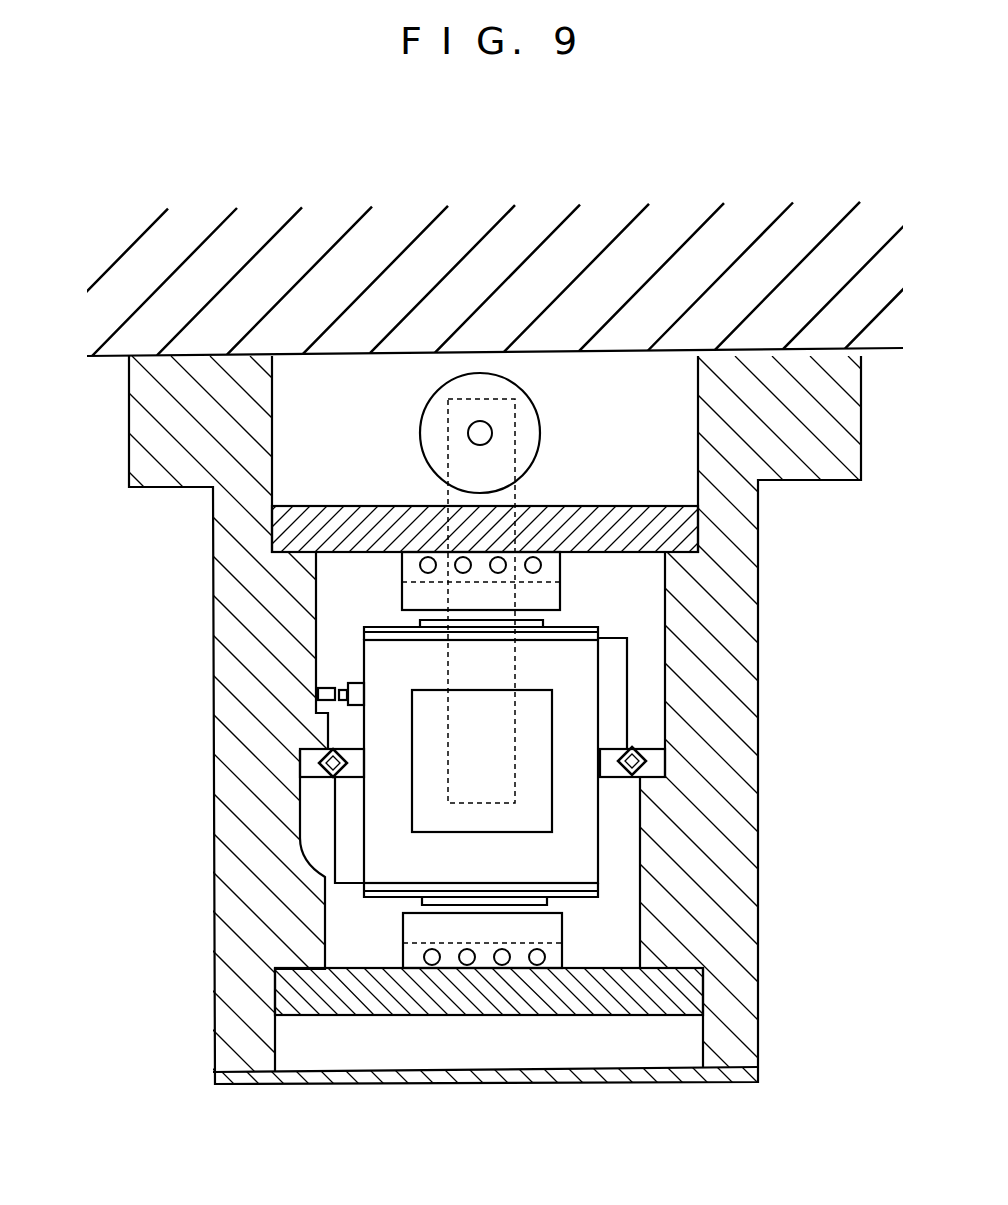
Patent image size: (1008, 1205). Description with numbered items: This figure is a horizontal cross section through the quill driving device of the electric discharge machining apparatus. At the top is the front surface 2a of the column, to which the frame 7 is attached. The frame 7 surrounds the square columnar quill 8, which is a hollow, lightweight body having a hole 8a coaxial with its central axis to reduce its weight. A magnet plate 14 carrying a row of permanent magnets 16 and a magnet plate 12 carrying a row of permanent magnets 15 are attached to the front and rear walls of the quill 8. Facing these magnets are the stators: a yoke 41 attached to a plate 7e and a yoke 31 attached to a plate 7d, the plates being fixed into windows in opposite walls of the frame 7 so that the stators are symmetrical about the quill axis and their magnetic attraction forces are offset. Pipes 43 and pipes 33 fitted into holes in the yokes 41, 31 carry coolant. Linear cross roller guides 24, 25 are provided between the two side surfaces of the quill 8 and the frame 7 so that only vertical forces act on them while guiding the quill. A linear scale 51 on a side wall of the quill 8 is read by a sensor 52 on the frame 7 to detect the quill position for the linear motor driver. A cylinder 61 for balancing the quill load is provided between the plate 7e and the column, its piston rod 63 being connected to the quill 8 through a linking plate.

The front surface of the column 2a is at (878, 349).
The frame 7 is at (855, 430).
The plate 7e is at (690, 527).
The plate 7d is at (652, 1010).
The cylinder 61 is at (433, 470).
The piston rod 63 is at (478, 433).
The yoke 41 is at (412, 598).
The pipes 43 is at (538, 565).
The yoke 31 is at (548, 933).
The pipes 33 is at (500, 951).
The row of permanent magnets 16 is at (427, 628).
The row of permanent magnets 15 is at (442, 901).
The quill 8 is at (575, 848).
The hole 8a is at (513, 833).
The magnet plate 14 is at (600, 633).
The magnet plate 12 is at (598, 889).
The linear cross roller guide 24 is at (637, 758).
The linear cross roller guide 25 is at (313, 775).
The sensor 52 is at (317, 692).
The linear scale 51 is at (353, 701).